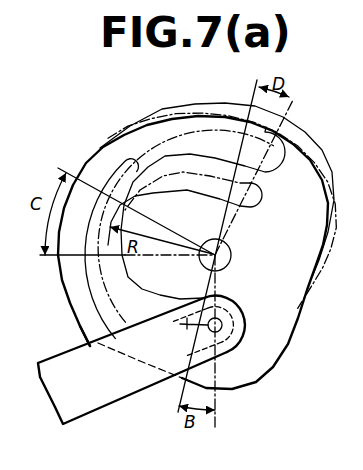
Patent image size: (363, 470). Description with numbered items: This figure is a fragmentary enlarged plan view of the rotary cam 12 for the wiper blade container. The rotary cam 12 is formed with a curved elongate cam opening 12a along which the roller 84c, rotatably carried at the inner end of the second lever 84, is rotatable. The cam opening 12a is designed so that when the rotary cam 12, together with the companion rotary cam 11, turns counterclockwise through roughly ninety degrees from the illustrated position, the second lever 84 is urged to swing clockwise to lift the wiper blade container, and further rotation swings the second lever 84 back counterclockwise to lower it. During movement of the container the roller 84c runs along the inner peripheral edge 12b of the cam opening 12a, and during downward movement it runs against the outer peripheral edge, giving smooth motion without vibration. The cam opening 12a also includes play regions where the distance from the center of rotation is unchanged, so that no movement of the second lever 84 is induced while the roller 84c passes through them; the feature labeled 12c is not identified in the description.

The rotary cam 11 is at (192, 106).
The rotary cam 12 is at (281, 325).
The cam opening 12a is at (92, 333).
The inner peripheral edge 12b is at (97, 284).
The outer arcuate slot 12c is at (125, 163).
The second lever 84 is at (100, 390).
The roller 84c is at (243, 310).